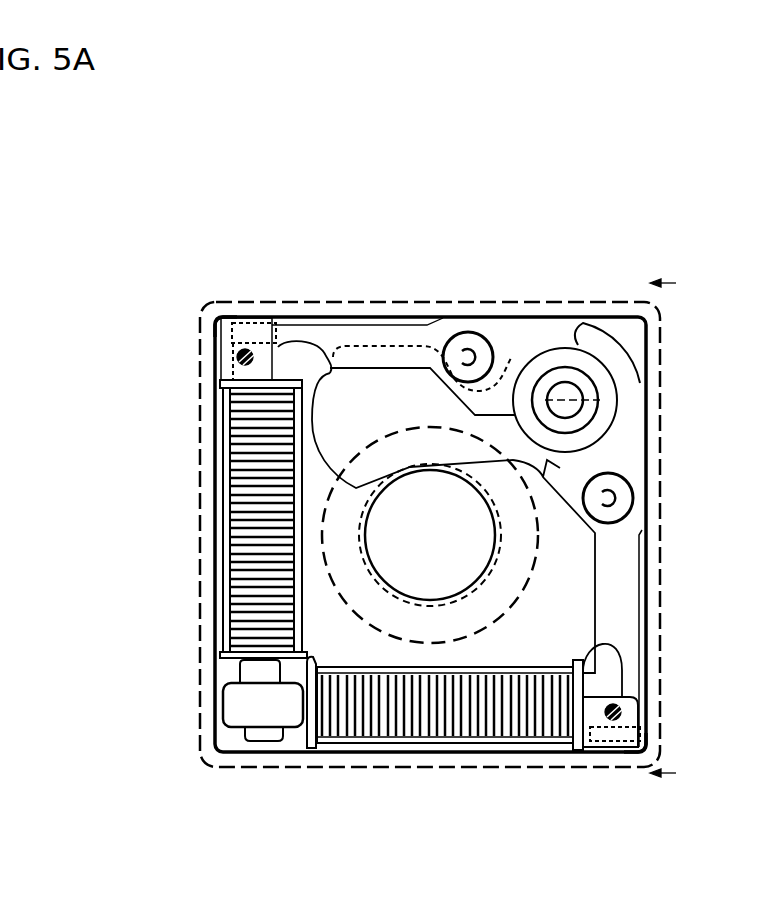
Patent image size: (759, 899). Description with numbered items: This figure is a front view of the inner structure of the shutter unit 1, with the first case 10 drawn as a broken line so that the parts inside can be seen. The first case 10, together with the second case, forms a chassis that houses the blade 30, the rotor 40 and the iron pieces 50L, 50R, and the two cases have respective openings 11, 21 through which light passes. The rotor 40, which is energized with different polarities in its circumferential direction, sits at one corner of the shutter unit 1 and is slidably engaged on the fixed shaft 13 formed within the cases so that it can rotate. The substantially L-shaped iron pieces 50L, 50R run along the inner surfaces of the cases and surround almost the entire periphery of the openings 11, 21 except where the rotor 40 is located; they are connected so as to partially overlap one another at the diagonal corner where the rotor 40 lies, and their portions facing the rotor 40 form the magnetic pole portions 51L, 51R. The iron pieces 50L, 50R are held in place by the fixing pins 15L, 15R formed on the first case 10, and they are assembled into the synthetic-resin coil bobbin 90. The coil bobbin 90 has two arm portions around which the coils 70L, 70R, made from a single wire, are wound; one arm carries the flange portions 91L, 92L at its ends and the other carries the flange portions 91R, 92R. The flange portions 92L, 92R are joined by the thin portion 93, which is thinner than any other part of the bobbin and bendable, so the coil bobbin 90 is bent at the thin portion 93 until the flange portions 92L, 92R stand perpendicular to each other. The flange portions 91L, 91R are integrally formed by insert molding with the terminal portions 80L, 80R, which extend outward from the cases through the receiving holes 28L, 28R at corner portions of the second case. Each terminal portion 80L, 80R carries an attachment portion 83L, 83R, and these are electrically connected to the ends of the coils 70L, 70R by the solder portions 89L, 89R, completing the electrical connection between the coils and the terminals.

The shutter unit 1 is at (569, 187).
The first case 10 is at (662, 352).
The opening 11 is at (282, 588).
The fixed shaft 13 is at (655, 416).
The fixing pin 15R is at (467, 332).
The fixing pin 15L is at (636, 502).
The opening 21 is at (216, 521).
The receiving hole 28R is at (214, 333).
The receiving hole 28L is at (648, 754).
The blade 30 is at (268, 510).
The rotor 40 is at (592, 368).
The iron piece 50R is at (388, 378).
The iron piece 50L is at (590, 573).
The magnetic pole portion 51R is at (537, 375).
The magnetic pole portion 51L is at (602, 437).
The coil 70R is at (306, 342).
The coil 70L is at (615, 650).
The terminal portion 80R is at (237, 358).
The terminal portion 80L is at (608, 745).
The attachment portion 83R is at (257, 328).
The attachment portion 83L is at (640, 735).
The solder portion 89R is at (221, 412).
The solder portion 89L is at (622, 712).
The coil bobbin 90 is at (300, 725).
The flange portion 91R is at (278, 383).
The flange portion 91L is at (586, 746).
The flange portion 92R is at (225, 655).
The flange portion 92L is at (312, 750).
The thin portion 93 is at (310, 665).